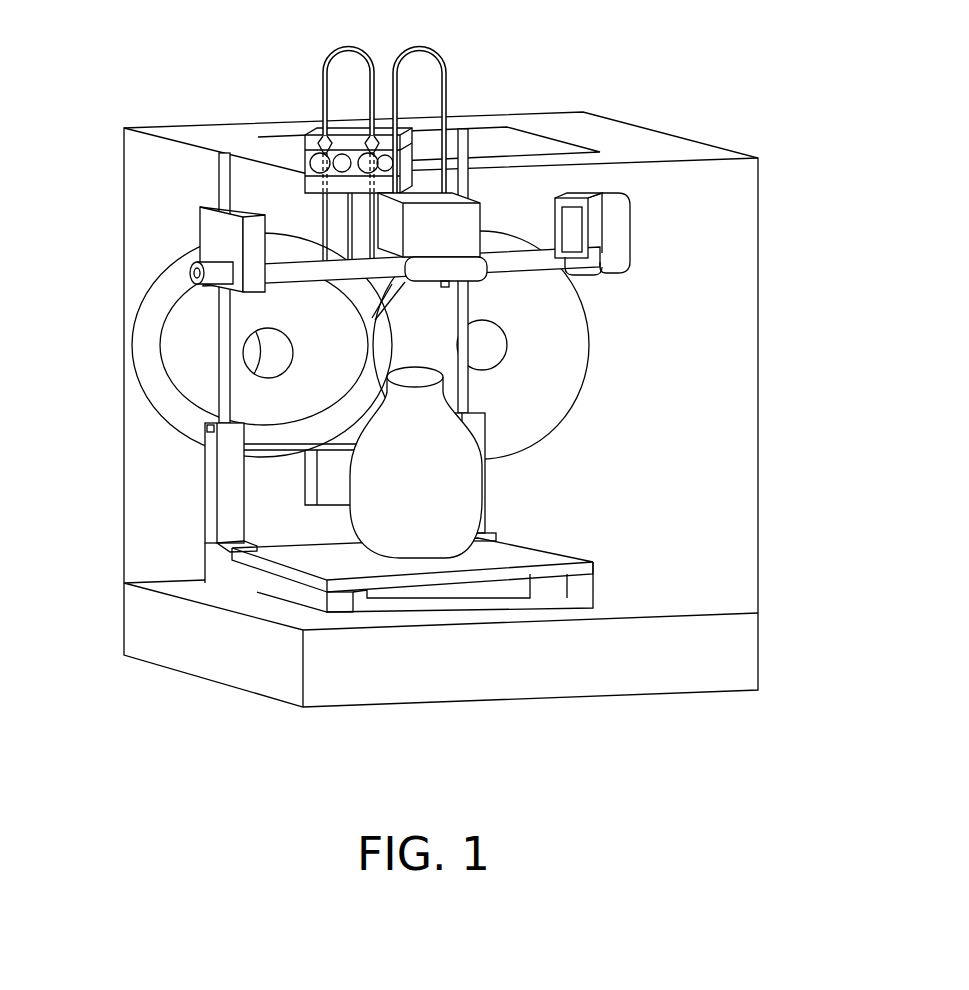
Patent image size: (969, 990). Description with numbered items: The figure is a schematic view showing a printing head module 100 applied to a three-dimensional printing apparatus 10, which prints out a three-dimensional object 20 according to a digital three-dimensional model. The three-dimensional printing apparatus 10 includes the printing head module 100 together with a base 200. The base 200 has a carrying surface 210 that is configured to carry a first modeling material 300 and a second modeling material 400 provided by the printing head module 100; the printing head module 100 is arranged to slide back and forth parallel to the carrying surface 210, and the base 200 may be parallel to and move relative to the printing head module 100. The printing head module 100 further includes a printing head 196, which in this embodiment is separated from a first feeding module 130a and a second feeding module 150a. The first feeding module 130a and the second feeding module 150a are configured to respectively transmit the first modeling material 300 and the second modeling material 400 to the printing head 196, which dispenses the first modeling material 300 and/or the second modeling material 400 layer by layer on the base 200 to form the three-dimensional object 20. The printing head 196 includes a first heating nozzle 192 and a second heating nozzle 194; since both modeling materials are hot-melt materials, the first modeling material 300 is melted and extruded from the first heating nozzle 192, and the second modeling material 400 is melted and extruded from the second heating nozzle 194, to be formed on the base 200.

The 3-D printing apparatus 10 is at (805, 773).
The 3-D object 20 is at (383, 488).
The printing head module 100 is at (295, 209).
The first feeding module 130a is at (392, 167).
The second feeding module 150a is at (318, 160).
The first heating nozzle 192 is at (512, 268).
The second heating nozzle 194 is at (405, 279).
The printing head 196 is at (483, 215).
The base 200 is at (540, 558).
The carrying surface 210 is at (524, 538).
The first modeling material 300 is at (426, 48).
The second modeling material 400 is at (343, 50).